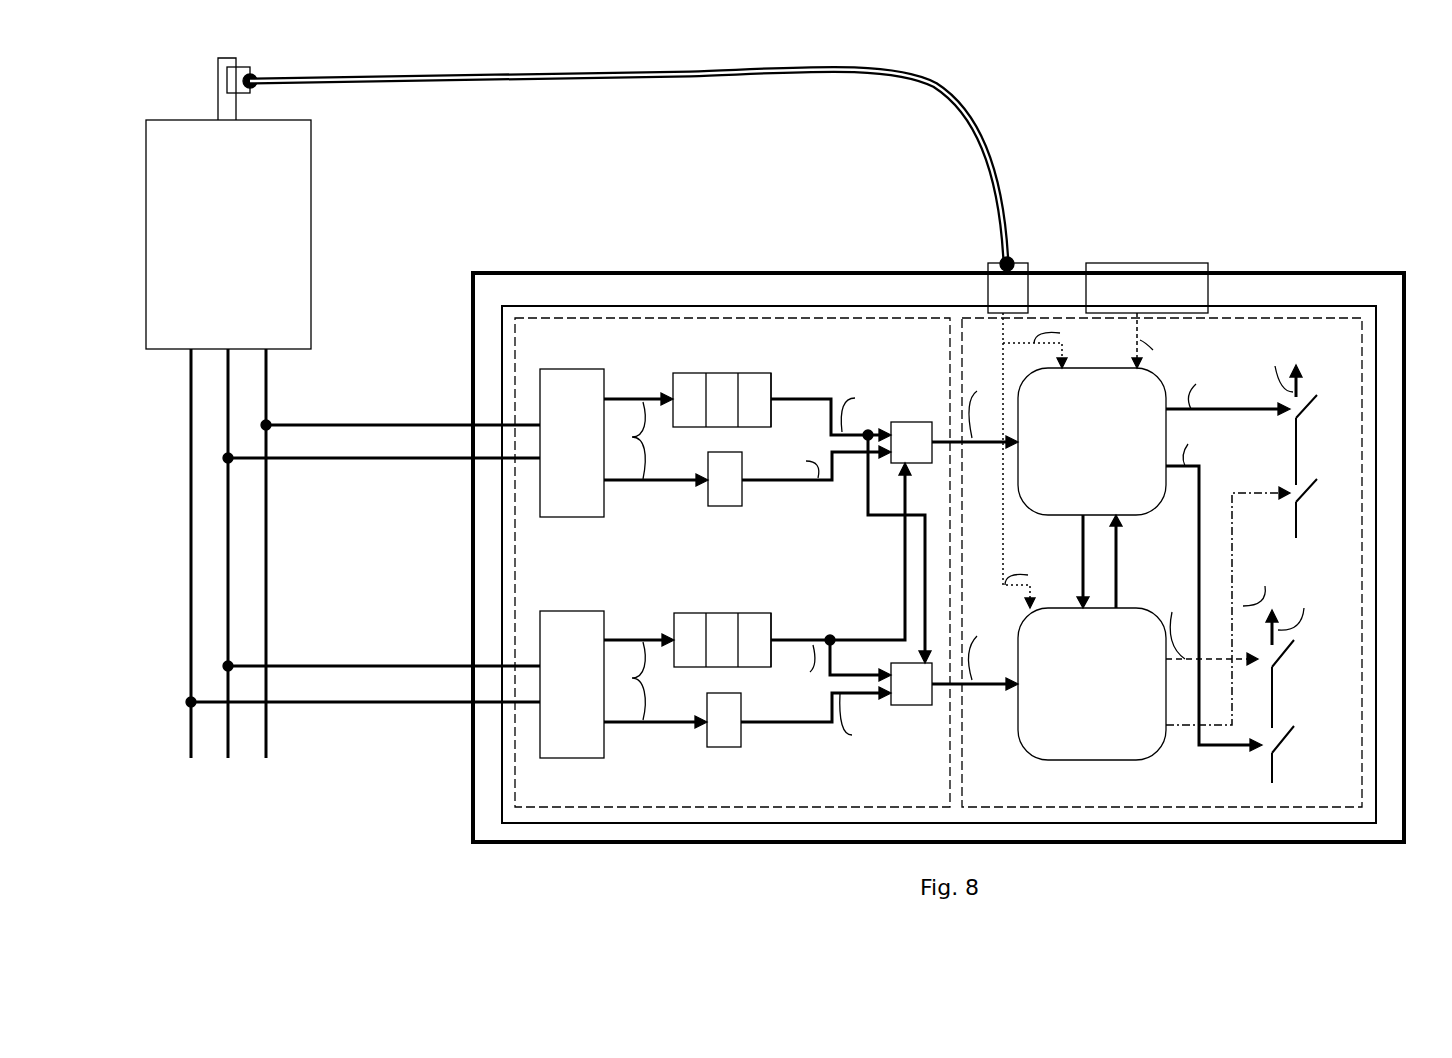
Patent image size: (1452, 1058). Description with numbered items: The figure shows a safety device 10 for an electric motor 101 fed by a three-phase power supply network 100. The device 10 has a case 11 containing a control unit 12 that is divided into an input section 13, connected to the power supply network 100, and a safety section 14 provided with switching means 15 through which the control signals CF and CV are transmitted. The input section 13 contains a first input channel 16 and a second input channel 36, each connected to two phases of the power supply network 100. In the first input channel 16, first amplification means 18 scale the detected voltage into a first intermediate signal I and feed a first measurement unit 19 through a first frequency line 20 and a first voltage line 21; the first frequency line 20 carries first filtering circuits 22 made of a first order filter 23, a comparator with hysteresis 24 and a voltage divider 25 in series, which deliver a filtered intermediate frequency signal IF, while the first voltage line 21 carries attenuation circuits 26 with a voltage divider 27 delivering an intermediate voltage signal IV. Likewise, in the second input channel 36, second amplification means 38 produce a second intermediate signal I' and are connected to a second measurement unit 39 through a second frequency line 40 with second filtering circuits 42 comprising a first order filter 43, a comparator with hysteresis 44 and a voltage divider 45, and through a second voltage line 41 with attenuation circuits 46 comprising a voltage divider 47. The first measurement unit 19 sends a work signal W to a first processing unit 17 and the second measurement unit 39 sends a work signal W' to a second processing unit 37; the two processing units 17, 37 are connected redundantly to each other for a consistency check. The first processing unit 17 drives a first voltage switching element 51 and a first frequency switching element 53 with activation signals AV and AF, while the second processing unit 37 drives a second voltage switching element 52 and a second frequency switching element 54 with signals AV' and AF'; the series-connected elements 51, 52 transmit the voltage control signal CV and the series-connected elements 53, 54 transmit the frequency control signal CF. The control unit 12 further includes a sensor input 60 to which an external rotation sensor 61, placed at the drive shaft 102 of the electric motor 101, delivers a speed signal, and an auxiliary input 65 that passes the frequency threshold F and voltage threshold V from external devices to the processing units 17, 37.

The device 10 is at (1356, 250).
The case 11 is at (530, 268).
The control unit 12 is at (818, 306).
The input section 13 is at (681, 318).
The safety section 14 is at (1243, 318).
The switching means 15 is at (1328, 349).
The first input channel 16 is at (892, 350).
The first processing unit 17 is at (1043, 509).
The first amplification means 18 is at (571, 385).
The first measurement unit 19 is at (905, 438).
The first frequency line 20 is at (803, 388).
The first voltage line 21 is at (780, 494).
The first filtering circuits 22 is at (664, 373).
The first order filter 23 is at (700, 385).
The comparator with hysteresis 24 is at (733, 385).
The voltage divider 25 is at (767, 385).
The attenuation circuits 26 is at (698, 495).
The voltage divider 27 is at (734, 493).
The second input channel 36 is at (827, 574).
The second processing unit 37 is at (1018, 724).
The second amplification means 38 is at (572, 627).
The second measurement unit 39 is at (905, 697).
The second frequency line 40 is at (778, 626).
The second voltage line 41 is at (793, 734).
The second filtering circuits 42 is at (664, 613).
The first order filter 43 is at (686, 622).
The comparator with hysteresis 44 is at (722, 622).
The voltage divider 45 is at (756, 622).
The attenuation circuits 46 is at (697, 735).
The voltage divider 47 is at (734, 735).
The first voltage switching element 51 is at (1310, 408).
The second voltage switching element 52 is at (1310, 494).
The first frequency switching element 53 is at (1294, 742).
The second frequency switching element 54 is at (1294, 656).
The sensor input 60 is at (1022, 270).
The rotation sensor 61 is at (239, 79).
The auxiliary input 65 is at (1147, 277).
The power supply network 100 is at (152, 580).
The electric motor 101 is at (284, 255).
The drive shaft 102 is at (228, 108).